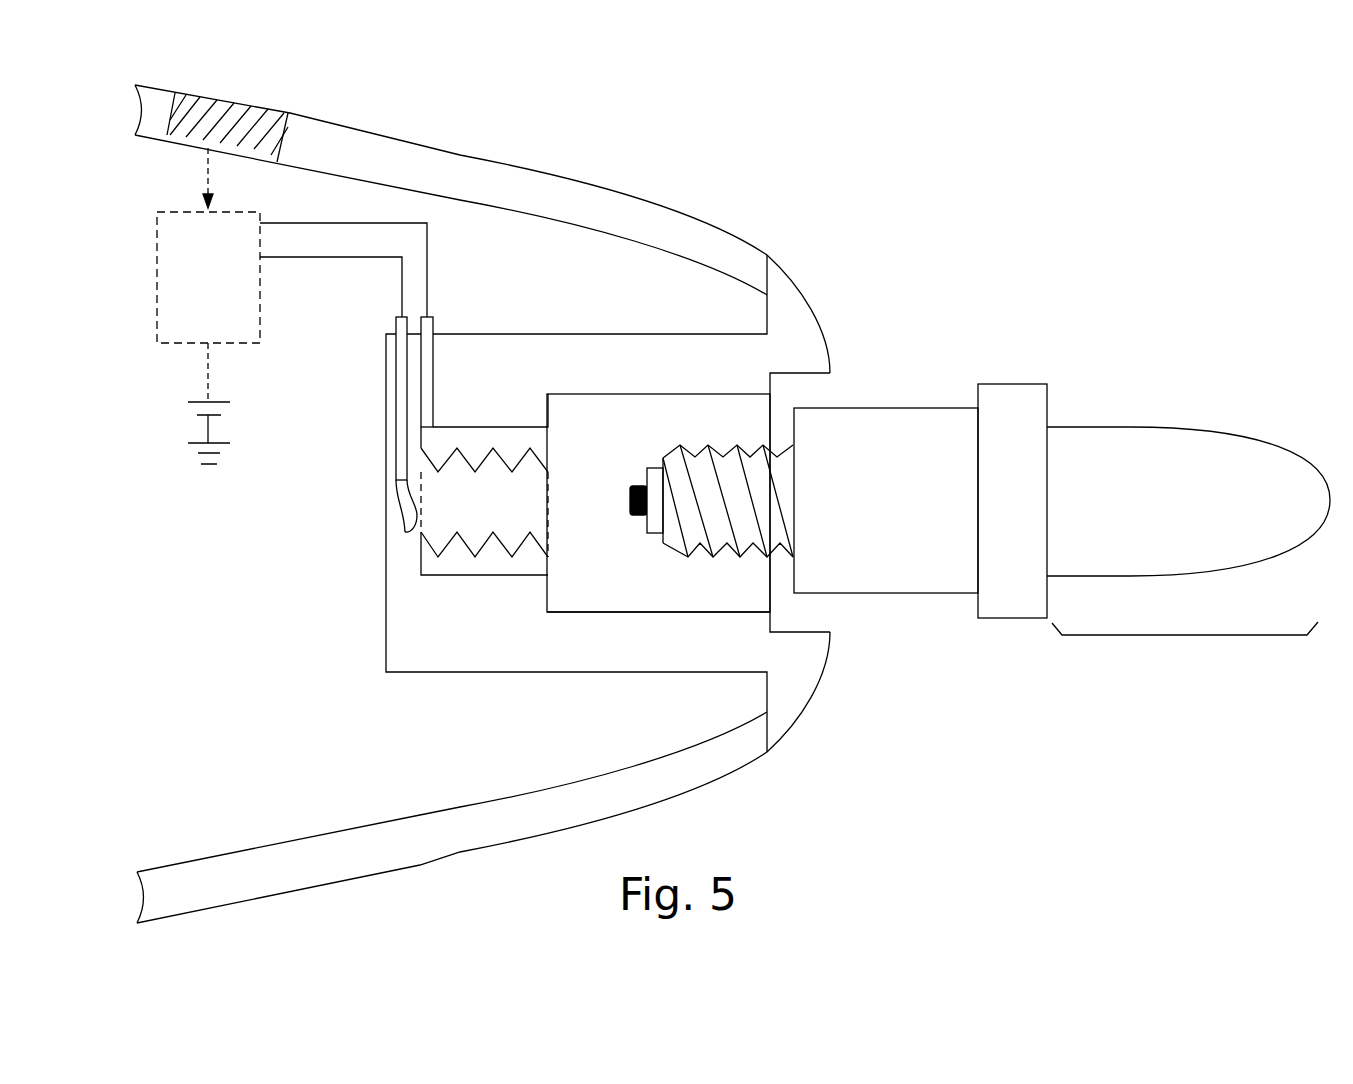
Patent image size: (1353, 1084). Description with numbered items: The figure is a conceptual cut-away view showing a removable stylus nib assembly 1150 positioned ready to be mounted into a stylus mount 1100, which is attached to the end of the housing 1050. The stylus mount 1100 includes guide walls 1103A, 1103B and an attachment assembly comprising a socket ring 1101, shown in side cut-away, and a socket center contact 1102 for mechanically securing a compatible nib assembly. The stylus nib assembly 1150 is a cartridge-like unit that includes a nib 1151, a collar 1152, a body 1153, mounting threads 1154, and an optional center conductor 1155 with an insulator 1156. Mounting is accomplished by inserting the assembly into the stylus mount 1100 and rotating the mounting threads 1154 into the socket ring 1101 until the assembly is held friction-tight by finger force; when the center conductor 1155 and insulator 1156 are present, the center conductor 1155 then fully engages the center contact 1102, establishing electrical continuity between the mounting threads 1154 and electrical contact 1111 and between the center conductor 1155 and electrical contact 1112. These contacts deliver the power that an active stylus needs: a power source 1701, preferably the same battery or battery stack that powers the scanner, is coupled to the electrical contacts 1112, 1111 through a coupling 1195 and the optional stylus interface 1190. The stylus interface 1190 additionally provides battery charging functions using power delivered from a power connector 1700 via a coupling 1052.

The power connector 1700 is at (238, 108).
The housing 1050 is at (677, 233).
The stylus mount 1100 is at (800, 332).
The coupling 1052 is at (208, 167).
The stylus interface 1190 is at (292, 277).
The coupling 1195 is at (210, 363).
The power source 1701 is at (183, 372).
The electrical contact 1112 is at (395, 325).
The electrical contact 1111 is at (435, 323).
The socket center contact 1102 is at (400, 503).
The socket ring 1101 is at (492, 575).
The guide wall 1103B is at (600, 392).
The guide wall 1103A is at (650, 613).
The center conductor 1155 is at (633, 517).
The insulator 1156 is at (655, 478).
The mounting threads 1154 is at (753, 550).
The body 1153 is at (885, 568).
The collar 1152 is at (1003, 402).
The stylus nib assembly 1150 is at (1128, 455).
The nib 1151 is at (1185, 635).